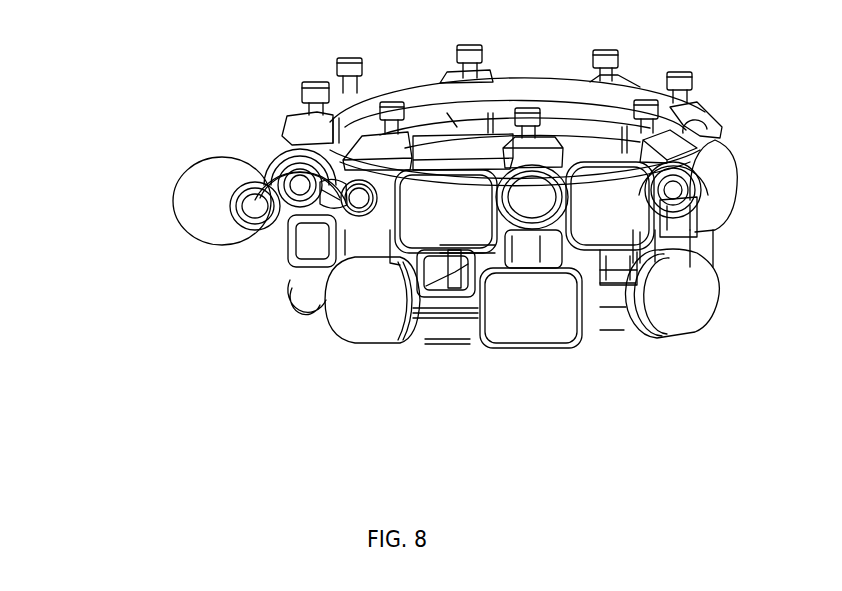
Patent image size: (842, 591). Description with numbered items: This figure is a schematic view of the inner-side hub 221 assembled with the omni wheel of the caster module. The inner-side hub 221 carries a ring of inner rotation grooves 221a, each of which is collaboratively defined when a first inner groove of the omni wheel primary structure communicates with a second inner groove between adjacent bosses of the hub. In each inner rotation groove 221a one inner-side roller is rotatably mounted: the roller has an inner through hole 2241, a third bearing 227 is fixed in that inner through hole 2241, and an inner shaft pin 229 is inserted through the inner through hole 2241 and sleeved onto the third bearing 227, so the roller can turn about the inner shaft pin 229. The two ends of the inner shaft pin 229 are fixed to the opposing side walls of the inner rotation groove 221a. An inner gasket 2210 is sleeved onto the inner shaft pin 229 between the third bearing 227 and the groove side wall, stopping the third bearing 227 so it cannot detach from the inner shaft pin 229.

The inner-side hub 221 is at (702, 124).
The inner through hole 2241 is at (262, 212).
The inner shaft pin 229 is at (322, 192).
The third bearing 227 is at (333, 230).
The inner rotation groove 221a is at (353, 203).
The inner gasket 2210 is at (360, 203).